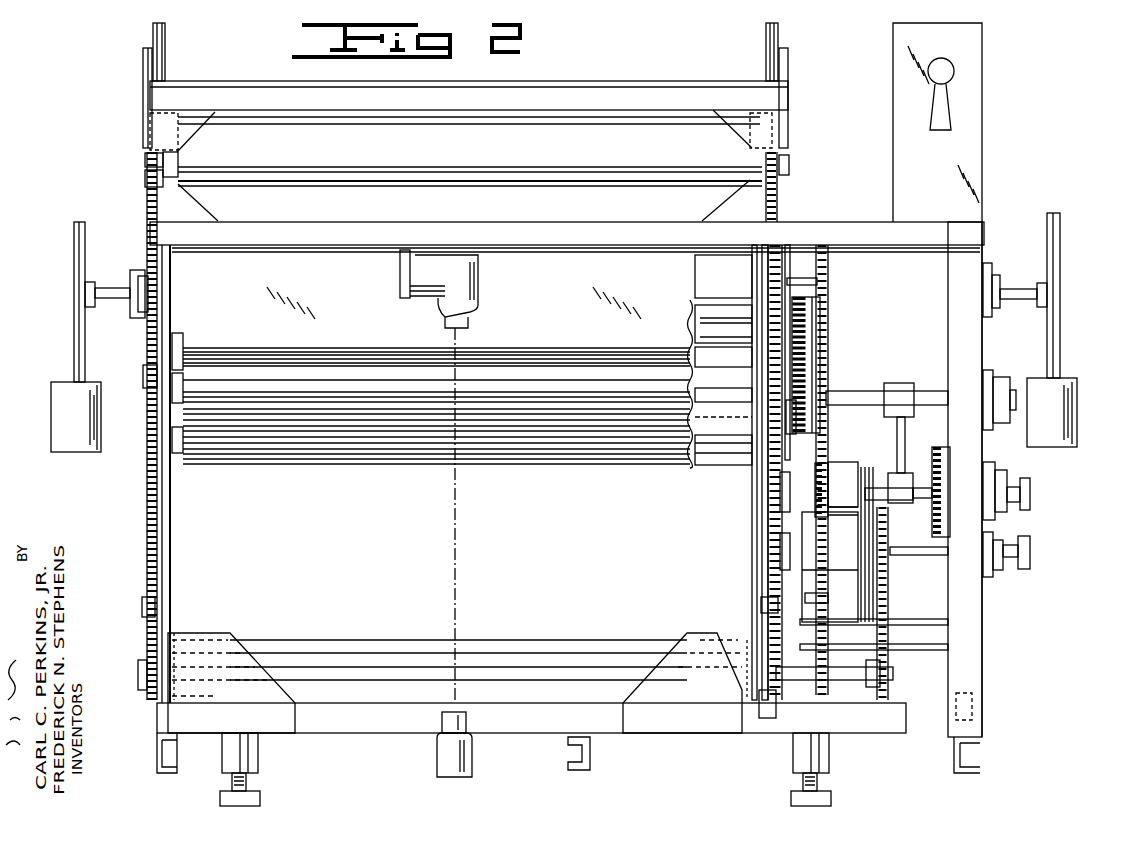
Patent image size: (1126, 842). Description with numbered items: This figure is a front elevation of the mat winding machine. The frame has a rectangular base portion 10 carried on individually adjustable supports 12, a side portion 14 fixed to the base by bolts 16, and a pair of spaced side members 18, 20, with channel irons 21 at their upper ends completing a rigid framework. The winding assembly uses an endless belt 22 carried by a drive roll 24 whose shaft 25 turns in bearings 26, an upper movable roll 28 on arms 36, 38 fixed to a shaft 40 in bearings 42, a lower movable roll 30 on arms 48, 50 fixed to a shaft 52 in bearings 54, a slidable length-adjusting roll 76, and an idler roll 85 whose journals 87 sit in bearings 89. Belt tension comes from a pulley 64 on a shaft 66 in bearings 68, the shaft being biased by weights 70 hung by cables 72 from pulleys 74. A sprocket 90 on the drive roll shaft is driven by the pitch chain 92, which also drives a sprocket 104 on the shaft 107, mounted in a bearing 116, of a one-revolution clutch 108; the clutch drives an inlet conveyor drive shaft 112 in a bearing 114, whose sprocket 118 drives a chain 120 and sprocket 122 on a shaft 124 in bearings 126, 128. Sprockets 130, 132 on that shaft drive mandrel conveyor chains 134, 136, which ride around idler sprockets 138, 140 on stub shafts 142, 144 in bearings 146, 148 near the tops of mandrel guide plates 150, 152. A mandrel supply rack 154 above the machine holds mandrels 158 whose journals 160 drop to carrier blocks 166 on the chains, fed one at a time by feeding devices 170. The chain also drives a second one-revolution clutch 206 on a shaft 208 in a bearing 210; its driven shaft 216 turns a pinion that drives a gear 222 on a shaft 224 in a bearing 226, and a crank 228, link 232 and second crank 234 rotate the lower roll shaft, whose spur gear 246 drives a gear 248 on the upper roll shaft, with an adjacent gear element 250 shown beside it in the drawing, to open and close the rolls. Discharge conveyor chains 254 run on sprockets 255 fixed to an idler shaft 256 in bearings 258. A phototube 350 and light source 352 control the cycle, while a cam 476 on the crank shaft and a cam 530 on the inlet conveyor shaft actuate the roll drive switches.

The base portion 10 is at (372, 738).
The adjustable supports 12 is at (258, 778).
The side portion 14 is at (970, 660).
The bolts 16 is at (975, 712).
The side member 18 is at (180, 578).
The side member 20 is at (766, 537).
The channel irons 21 is at (582, 236).
The endless belt 22 is at (662, 458).
The drive roll 24 is at (725, 255).
The shaft 25 is at (840, 280).
The bearings 26 is at (146, 256).
The movable roll 28 is at (715, 352).
The movable roll 30 is at (720, 455).
The arm 36 is at (700, 337).
The arm 38 is at (182, 345).
The shaft 40 is at (830, 337).
The bearings 42 is at (146, 340).
The arm 48 is at (702, 398).
The arm 50 is at (183, 402).
The shaft 52 is at (848, 396).
The bearings 54 is at (150, 420).
The pulley 64 is at (92, 242).
The shaft 66 is at (112, 288).
The bearings 68 is at (142, 288).
The weights 70 is at (77, 447).
The cables 72 is at (72, 372).
The pulleys 74 is at (85, 328).
The roll 76 is at (700, 323).
The idler roll 85 is at (708, 420).
The journals 87 is at (176, 466).
The bearings 89 is at (176, 472).
The sprocket 90 is at (830, 268).
The pitch chain 92 is at (830, 452).
The sprocket 104 is at (828, 567).
The shaft 107 is at (772, 552).
The one-revolution clutch 108 is at (843, 603).
The inlet conveyor drive shaft 112 is at (902, 562).
The bearing 114 is at (992, 578).
The bearing 116 is at (770, 566).
The sprocket 118 is at (902, 520).
The chain 120 is at (892, 618).
The sprocket 122 is at (886, 694).
The shaft 124 is at (848, 682).
The bearing 126 is at (142, 682).
The bearing 128 is at (745, 705).
The sprocket 130 is at (150, 703).
The sprocket 132 is at (772, 702).
The mandrel conveyor chain 134 is at (147, 570).
The mandrel conveyor chain 136 is at (752, 625).
The idler sprocket 138 is at (147, 175).
The idler sprocket 140 is at (789, 185).
The stub shaft 142 is at (147, 183).
The stub shaft 144 is at (789, 170).
The bearing 146 is at (178, 158).
The bearing 148 is at (786, 152).
The mandrel guide plate 150 is at (142, 78).
The mandrel guide plate 152 is at (790, 80).
The mandrel supply rack 154 is at (623, 58).
The mandrels 158 is at (553, 133).
The journals 160 is at (180, 134).
The mandrel carrier blocks 166 is at (147, 162).
The feeding device 170 is at (150, 142).
The one-revolution clutch 206 is at (850, 474).
The shaft 208 is at (774, 492).
The bearing 210 is at (770, 522).
The shaft 216 is at (841, 488).
The gear 222 is at (992, 522).
The shaft 224 is at (988, 470).
The bearing 226 is at (995, 474).
The crank 228 is at (898, 544).
The link 232 is at (903, 468).
The crank 234 is at (900, 382).
The spur gear 246 is at (826, 422).
The gear 248 is at (826, 322).
The gear face 250 is at (827, 353).
The chains 254 is at (204, 633).
The sprocket 255 is at (457, 673).
The idler shaft 256 is at (382, 652).
The bearings 258 is at (176, 640).
The phototube 350 is at (470, 270).
The light source 352 is at (474, 776).
The cam 476 is at (1032, 498).
The cam 530 is at (1032, 562).